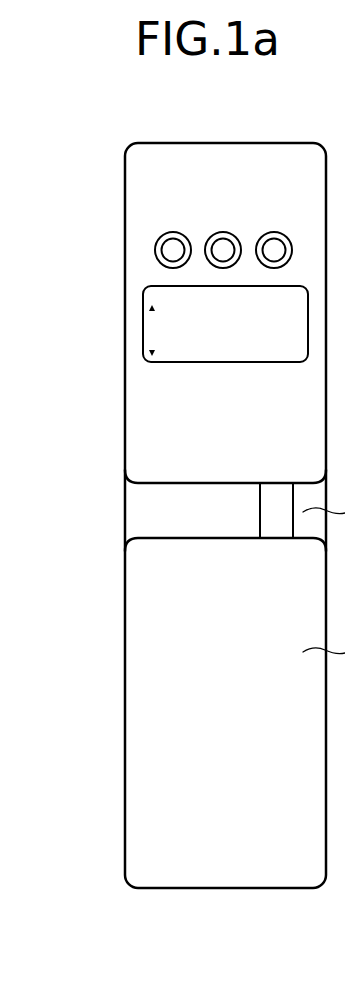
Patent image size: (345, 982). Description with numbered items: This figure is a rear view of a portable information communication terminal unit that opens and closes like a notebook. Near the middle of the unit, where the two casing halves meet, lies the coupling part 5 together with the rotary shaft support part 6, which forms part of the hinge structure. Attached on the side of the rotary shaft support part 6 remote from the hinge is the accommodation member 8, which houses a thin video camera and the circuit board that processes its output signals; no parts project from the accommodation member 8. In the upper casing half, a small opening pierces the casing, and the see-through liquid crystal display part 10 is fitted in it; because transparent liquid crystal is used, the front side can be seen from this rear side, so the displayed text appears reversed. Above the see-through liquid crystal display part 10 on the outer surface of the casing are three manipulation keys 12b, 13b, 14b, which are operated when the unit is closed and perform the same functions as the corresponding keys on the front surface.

The coupling part 5 is at (118, 488).
The accommodation member 8 is at (176, 497).
The rotary shaft support part 6 is at (278, 523).
The see-through liquid crystal display part 10 is at (287, 363).
The manipulation key 12b is at (275, 247).
The manipulation key 13b is at (224, 247).
The manipulation key 14b is at (174, 247).